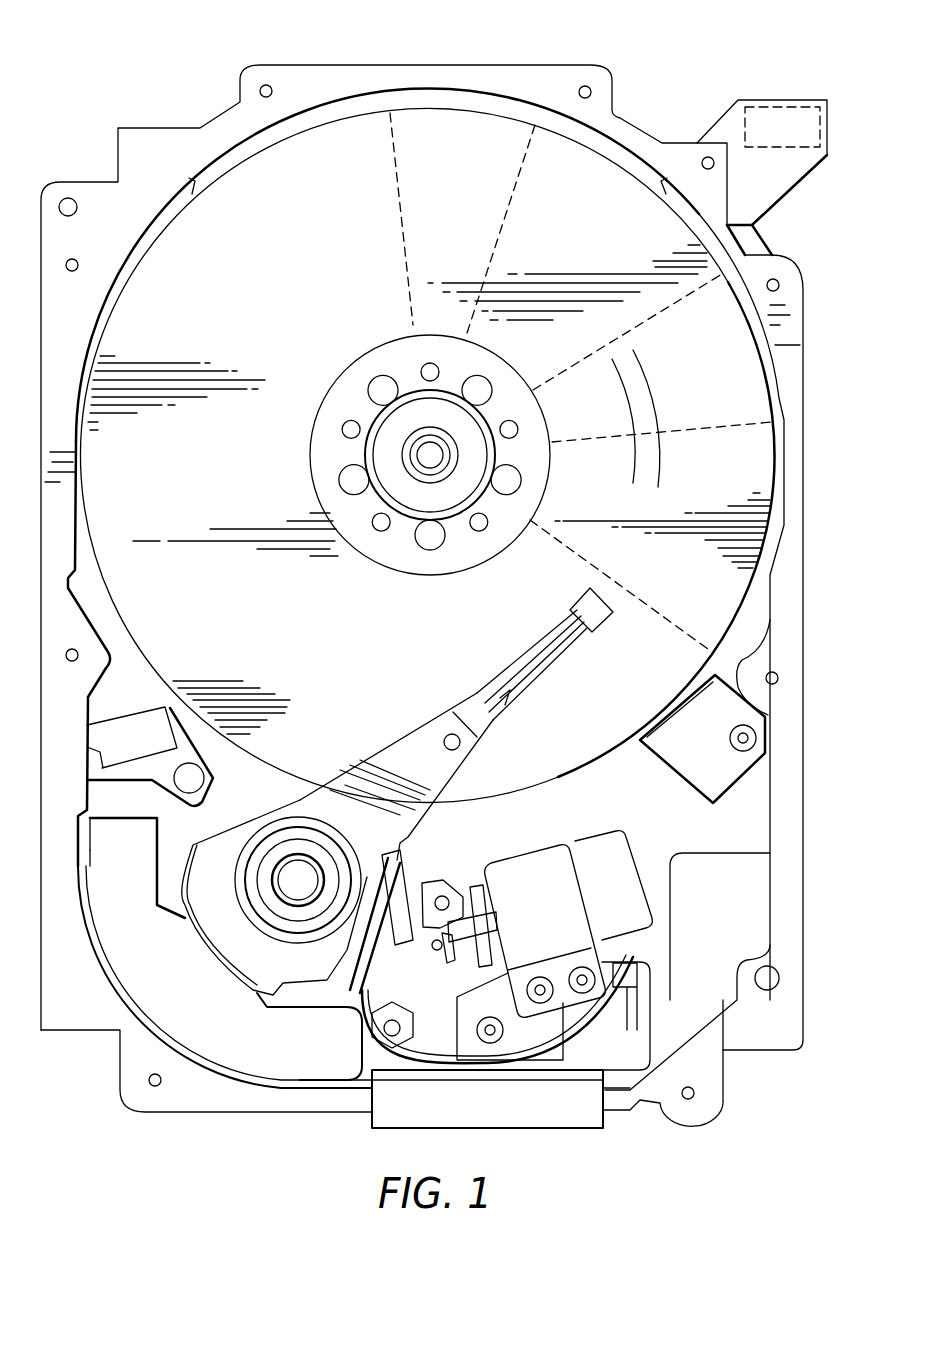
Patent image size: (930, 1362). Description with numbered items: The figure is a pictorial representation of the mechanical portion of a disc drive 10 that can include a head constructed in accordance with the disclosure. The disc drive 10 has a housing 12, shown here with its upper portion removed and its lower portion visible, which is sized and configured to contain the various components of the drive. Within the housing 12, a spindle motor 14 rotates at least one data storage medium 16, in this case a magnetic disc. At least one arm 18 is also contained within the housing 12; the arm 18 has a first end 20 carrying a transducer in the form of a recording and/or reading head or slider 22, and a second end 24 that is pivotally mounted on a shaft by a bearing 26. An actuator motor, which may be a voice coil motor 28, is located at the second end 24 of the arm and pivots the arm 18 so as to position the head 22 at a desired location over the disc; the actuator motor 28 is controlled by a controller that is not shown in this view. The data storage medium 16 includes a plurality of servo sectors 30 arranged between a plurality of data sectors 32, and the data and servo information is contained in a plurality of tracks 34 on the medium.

The disc drive 10 is at (98, 110).
The housing 12 is at (566, 73).
The spindle motor 14 is at (423, 458).
The data storage medium 16 is at (342, 246).
The arm 18 is at (415, 755).
The first end 20 is at (535, 640).
The slider 22 is at (587, 608).
The second end 24 is at (327, 820).
The bearing 26 is at (290, 870).
The voice coil motor 28 is at (191, 1001).
The servo sectors 30 is at (447, 128).
The data sectors 32 is at (612, 190).
The tracks 34 is at (642, 393).